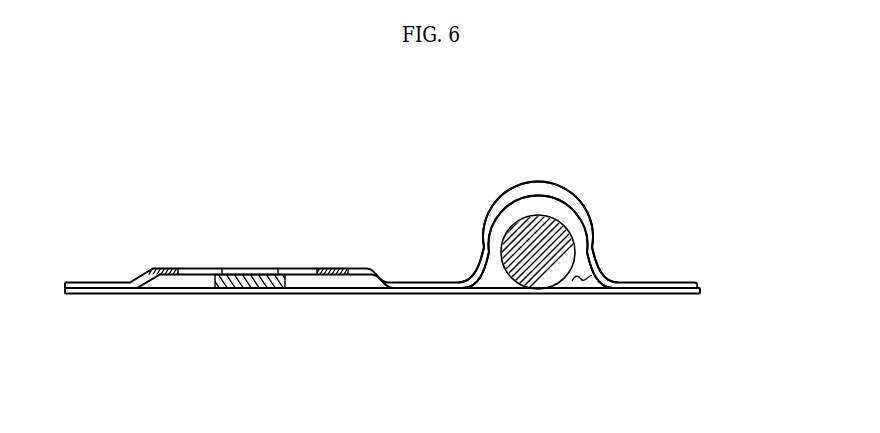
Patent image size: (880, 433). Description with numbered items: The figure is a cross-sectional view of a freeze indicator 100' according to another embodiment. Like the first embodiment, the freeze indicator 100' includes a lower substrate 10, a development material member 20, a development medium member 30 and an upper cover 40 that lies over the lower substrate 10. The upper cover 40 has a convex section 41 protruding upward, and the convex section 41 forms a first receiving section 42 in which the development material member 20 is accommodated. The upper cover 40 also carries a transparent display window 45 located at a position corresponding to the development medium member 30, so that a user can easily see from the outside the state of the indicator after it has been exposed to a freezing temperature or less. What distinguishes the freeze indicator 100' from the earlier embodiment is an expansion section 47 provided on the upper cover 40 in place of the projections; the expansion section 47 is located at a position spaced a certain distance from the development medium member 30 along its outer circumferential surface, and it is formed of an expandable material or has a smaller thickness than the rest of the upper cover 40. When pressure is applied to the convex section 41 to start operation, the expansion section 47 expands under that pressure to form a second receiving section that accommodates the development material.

The freeze indicator 100' is at (433, 241).
The lower substrate 10 is at (700, 291).
The development material member 20 is at (554, 228).
The development medium member 30 is at (245, 288).
The upper cover 40 is at (694, 281).
The convex section 41 is at (533, 203).
The first receiving section 42 is at (577, 285).
The transparent display window 45 is at (247, 267).
The expansion section 47 is at (335, 267).